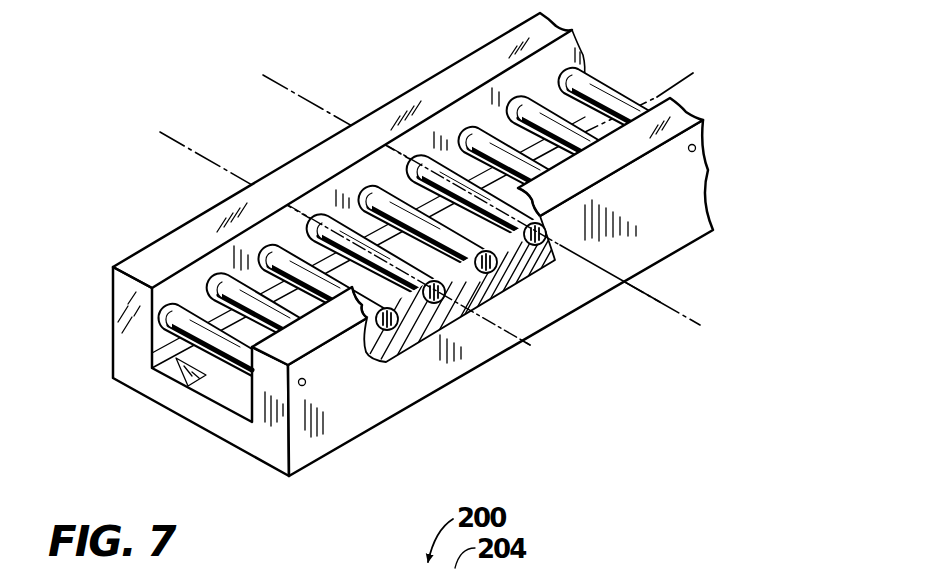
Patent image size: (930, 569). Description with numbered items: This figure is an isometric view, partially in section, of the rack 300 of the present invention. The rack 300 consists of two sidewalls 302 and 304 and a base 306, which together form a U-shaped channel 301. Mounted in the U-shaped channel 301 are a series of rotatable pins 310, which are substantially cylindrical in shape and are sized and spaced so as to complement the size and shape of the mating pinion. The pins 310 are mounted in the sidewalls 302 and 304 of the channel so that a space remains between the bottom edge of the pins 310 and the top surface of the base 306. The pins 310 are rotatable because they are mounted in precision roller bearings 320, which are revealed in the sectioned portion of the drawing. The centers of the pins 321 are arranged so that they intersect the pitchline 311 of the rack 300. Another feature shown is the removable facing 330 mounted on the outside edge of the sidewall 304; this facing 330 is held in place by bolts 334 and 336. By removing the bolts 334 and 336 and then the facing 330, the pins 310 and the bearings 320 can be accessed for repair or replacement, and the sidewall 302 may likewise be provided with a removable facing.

The rack 300 is at (195, 203).
The U-shaped channel 301 is at (178, 376).
The sidewall 302 is at (113, 316).
The sidewall 304 is at (267, 423).
The base 306 is at (212, 423).
The rotatable pins 310 is at (160, 326).
The pitchline 311 is at (678, 81).
The precision roller bearings 320 is at (397, 360).
The centers of the pins 321 is at (527, 352).
The removable facing 330 is at (695, 203).
The bolt 334 is at (305, 385).
The bolt 336 is at (696, 148).